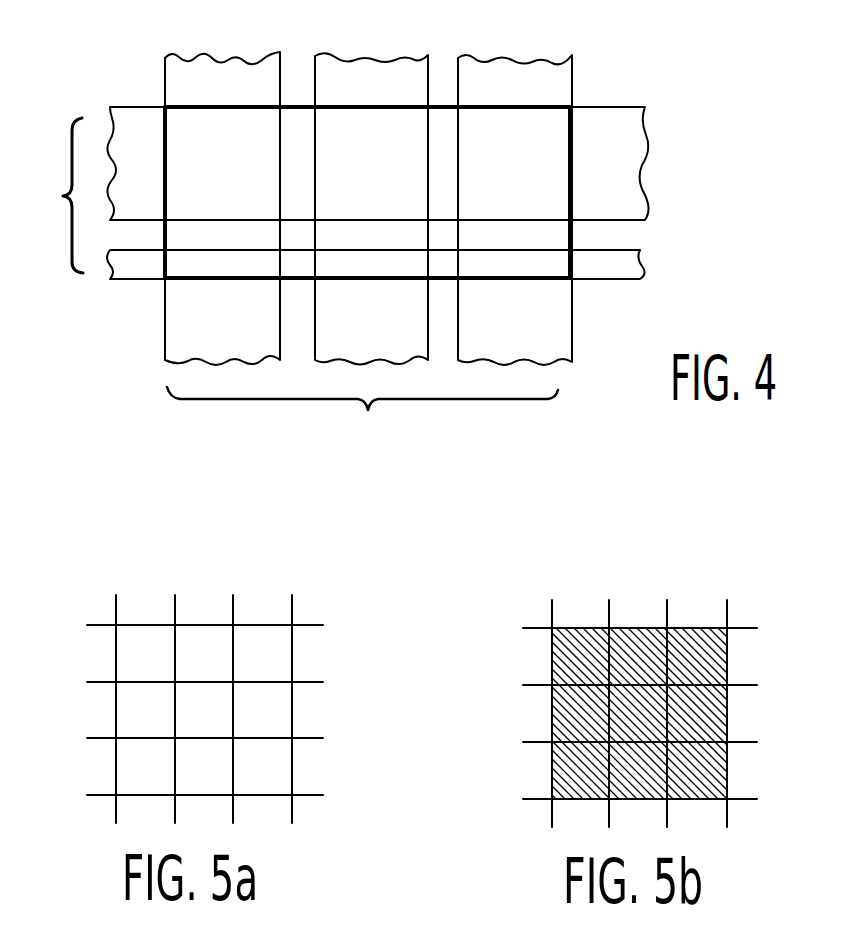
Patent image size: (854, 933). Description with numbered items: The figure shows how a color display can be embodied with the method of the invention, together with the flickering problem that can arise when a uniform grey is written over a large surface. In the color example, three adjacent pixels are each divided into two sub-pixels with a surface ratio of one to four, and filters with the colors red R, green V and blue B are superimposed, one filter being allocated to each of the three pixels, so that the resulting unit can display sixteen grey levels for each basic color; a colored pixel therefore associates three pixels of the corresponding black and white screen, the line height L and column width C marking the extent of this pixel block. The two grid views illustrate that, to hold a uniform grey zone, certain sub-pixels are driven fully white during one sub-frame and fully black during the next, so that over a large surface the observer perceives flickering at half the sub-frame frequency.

The line height of pixel block L is at (57, 195).
The column width of pixel block C is at (362, 417).
The red color stripe R is at (222, 208).
The green color stripe V is at (371, 208).
The blue color stripe B is at (515, 210).